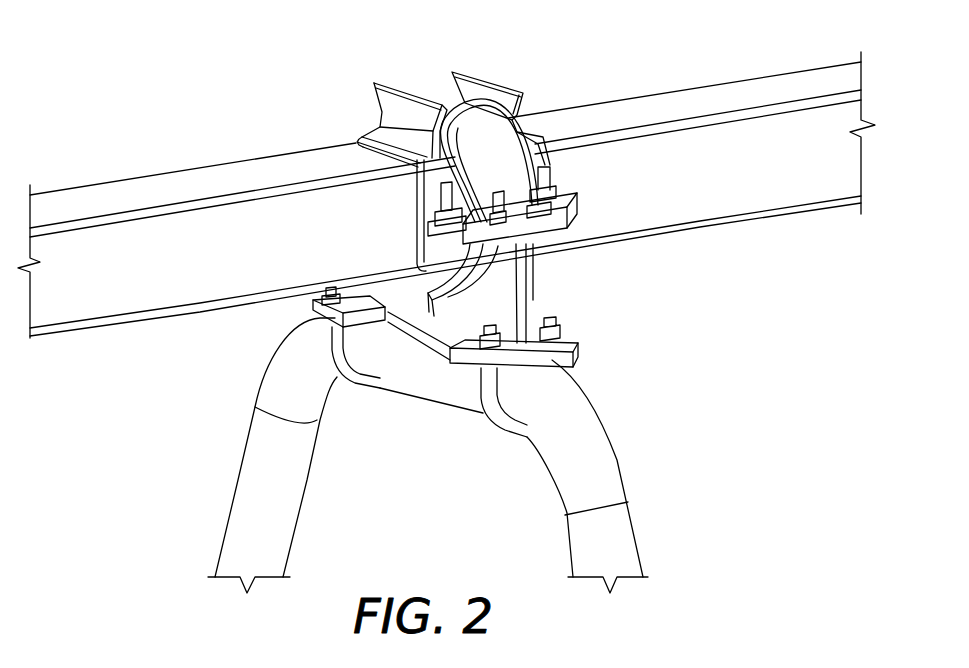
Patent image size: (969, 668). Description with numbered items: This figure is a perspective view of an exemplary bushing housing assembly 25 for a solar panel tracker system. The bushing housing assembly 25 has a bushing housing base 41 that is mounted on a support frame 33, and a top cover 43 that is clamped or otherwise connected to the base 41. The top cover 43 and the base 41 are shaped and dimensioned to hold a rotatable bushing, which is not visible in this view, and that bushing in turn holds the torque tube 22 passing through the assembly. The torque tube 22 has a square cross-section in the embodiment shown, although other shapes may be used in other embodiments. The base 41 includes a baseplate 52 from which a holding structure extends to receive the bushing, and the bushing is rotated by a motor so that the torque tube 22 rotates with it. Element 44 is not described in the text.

The torque tube 22 is at (835, 70).
The bushing housing assembly 25 is at (511, 58).
The top cover 43 is at (467, 118).
The lower saddle clamp 44 is at (468, 290).
The bushing housing base 41 is at (535, 292).
The baseplate 52 is at (568, 333).
The support frame 33 is at (606, 432).